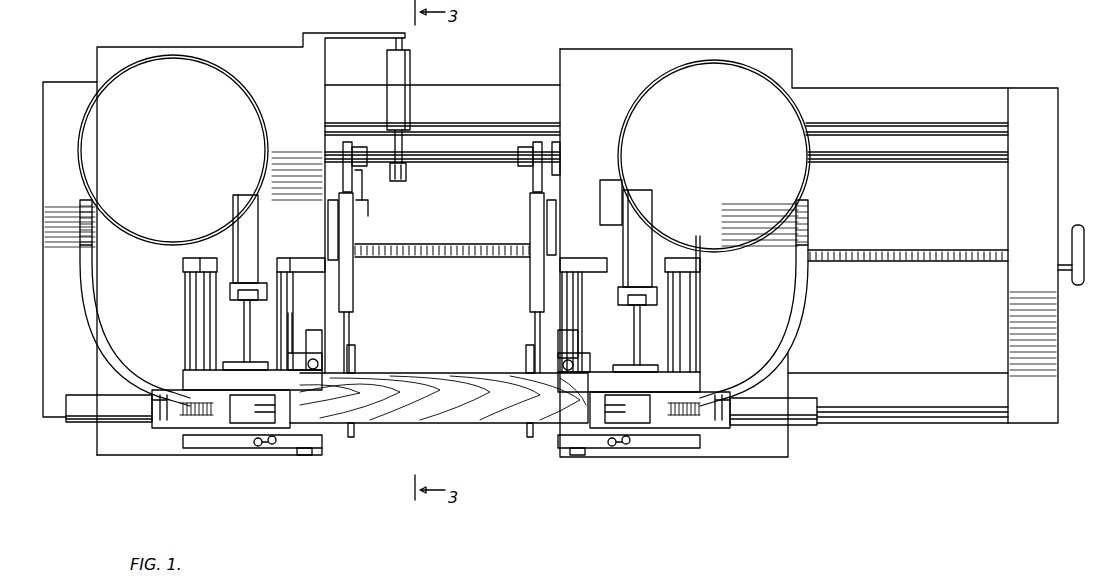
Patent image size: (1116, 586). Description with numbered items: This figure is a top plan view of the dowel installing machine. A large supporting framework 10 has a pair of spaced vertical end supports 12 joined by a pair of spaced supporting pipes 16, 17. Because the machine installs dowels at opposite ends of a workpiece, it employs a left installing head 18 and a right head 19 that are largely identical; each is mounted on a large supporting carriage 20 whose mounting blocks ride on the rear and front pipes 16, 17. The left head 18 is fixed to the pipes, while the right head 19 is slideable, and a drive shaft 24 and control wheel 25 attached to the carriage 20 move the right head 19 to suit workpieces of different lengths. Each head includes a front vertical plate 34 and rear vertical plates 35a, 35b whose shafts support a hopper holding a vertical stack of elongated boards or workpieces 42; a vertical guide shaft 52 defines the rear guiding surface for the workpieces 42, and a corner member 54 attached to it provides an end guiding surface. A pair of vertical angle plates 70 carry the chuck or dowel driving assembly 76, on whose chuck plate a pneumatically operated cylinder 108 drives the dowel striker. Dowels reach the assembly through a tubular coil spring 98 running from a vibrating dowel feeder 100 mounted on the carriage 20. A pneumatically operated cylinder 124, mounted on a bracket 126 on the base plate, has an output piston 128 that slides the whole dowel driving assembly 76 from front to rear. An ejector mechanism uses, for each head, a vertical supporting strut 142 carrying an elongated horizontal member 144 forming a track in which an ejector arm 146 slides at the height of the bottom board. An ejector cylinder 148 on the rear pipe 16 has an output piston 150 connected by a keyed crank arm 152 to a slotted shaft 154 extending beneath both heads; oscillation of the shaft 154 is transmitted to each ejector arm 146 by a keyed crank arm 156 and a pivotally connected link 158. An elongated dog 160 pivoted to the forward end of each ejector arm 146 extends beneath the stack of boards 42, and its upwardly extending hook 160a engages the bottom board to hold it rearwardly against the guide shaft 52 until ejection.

The supporting framework 10 is at (970, 428).
The vertical end supports 12 is at (45, 327).
The rear supporting pipe 16 is at (935, 88).
The front supporting pipe 17 is at (936, 357).
The left installing head 18 is at (182, 300).
The right head 19 is at (700, 352).
The supporting carriage 20 is at (116, 448).
The drive shaft 24 is at (891, 232).
The control wheel 25 is at (1078, 226).
The front vertical plate 34 is at (272, 455).
The rear vertical plate 35a is at (316, 258).
The rear vertical plate 35b is at (200, 262).
The workpieces 42 is at (455, 352).
The vertical guide shaft 52 is at (318, 366).
The corner member 54 is at (303, 352).
The vertical angle plates 70 is at (252, 384).
The dowel driving assembly 76 is at (178, 426).
The tubular coil spring 98 is at (80, 259).
The dowel feeder 100 is at (176, 55).
The pneumatically operated cylinder 108 is at (80, 395).
The pneumatically operated cylinder 124 is at (246, 244).
The bracket 126 is at (236, 300).
The output piston 128 is at (247, 345).
The supporting strut 142 is at (340, 213).
The elongated horizontal member 144 is at (353, 278).
The ejector arm 146 is at (350, 322).
The ejector cylinder 148 is at (410, 68).
The output piston 150 is at (404, 130).
The keyed crank arm 152 is at (406, 174).
The slotted shaft 154 is at (468, 160).
The keyed crank arm 156 is at (362, 176).
The link 158 is at (366, 208).
The dog 160 is at (355, 354).
The hook 160a is at (352, 428).